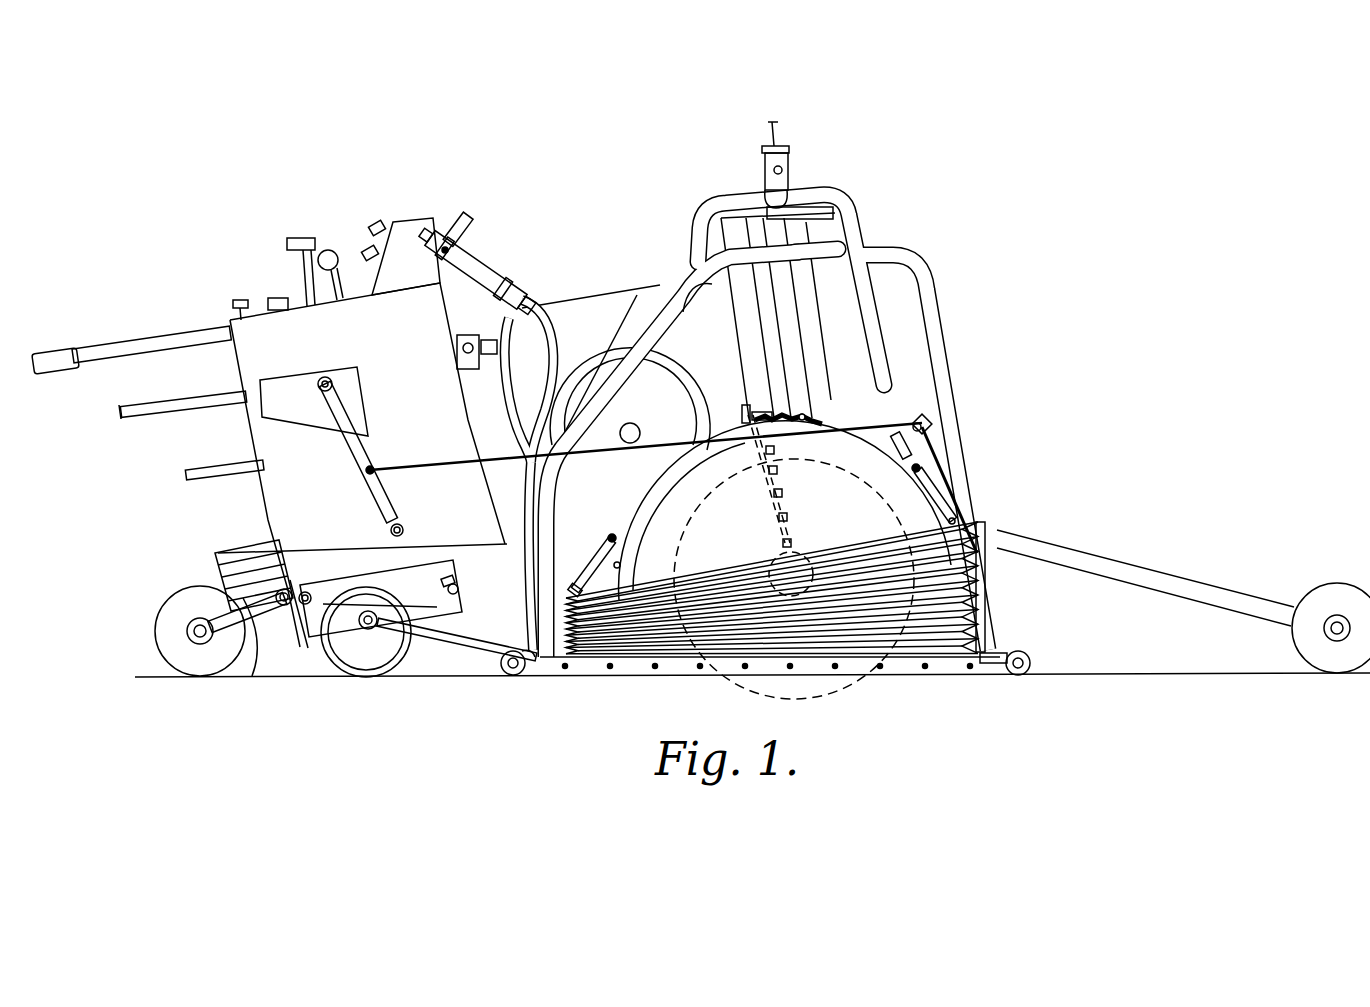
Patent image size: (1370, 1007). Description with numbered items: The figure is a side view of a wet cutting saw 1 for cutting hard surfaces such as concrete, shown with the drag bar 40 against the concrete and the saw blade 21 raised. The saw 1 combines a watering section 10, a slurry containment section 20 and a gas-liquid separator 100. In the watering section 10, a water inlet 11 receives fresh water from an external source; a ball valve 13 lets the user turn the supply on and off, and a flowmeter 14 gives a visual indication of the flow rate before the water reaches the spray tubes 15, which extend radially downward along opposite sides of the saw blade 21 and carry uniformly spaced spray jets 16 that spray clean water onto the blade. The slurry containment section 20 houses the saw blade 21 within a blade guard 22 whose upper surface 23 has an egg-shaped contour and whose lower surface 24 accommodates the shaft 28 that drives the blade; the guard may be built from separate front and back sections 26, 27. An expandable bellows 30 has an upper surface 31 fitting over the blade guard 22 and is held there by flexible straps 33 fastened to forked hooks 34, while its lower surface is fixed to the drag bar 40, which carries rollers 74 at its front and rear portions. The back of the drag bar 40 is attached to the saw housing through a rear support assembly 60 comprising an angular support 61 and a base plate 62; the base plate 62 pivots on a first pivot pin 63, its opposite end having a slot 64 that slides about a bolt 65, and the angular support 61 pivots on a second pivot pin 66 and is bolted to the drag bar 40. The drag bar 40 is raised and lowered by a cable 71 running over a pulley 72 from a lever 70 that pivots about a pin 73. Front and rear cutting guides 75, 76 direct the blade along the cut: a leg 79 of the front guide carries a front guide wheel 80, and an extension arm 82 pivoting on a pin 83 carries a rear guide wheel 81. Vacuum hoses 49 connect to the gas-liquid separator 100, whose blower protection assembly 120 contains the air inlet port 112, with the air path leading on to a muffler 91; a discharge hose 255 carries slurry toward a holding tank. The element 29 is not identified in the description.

The wet cutting saw 1 is at (968, 202).
The watering section 10 is at (496, 205).
The water inlet 11 is at (193, 393).
The ball valve 13 is at (446, 247).
The flowmeter 14 is at (493, 270).
The spray tubes 15 is at (790, 517).
The spray jets 16 is at (769, 502).
The slurry containment section 20 is at (958, 445).
The saw blade 21 is at (840, 690).
The blade guard 22 is at (890, 418).
The upper surface 23 is at (665, 490).
The lower surface 24 is at (607, 576).
The front section 26 is at (902, 488).
The back section 27 is at (742, 492).
The shaft 28 is at (791, 597).
The adjustment rack 29 is at (813, 413).
The expandable bellows 30 is at (963, 611).
The upper surface 31 is at (973, 547).
The flexible straps 33 is at (950, 500).
The forked hooks 34 is at (930, 482).
The drag bar 40 is at (977, 673).
The vacuum hoses 49 is at (540, 634).
The rear support assembly 60 is at (384, 647).
The angular support 61 is at (429, 643).
The base plate 62 is at (340, 632).
The first pivot pin 63 is at (297, 587).
The slot 64 is at (453, 582).
The bolt 65 is at (458, 590).
The second pivot pin 66 is at (368, 632).
The lever 70 is at (356, 468).
The cable 71 is at (467, 462).
The pulley 72 is at (927, 419).
The pin 73 is at (326, 378).
The rollers 74 is at (509, 673).
The front cutting guide 75 is at (1283, 575).
The rear cutting guide 76 is at (176, 576).
The leg 79 is at (1128, 557).
The front guide wheel 80 is at (1330, 590).
The rear guide wheel 81 is at (161, 618).
The extension arm 82 is at (241, 672).
The pin 83 is at (278, 607).
The muffler 91 is at (803, 287).
The gas-liquid separator 100 is at (833, 210).
The air inlet port 112 is at (783, 170).
The blower protection assembly 120 is at (740, 158).
The discharge hose 255 is at (205, 470).